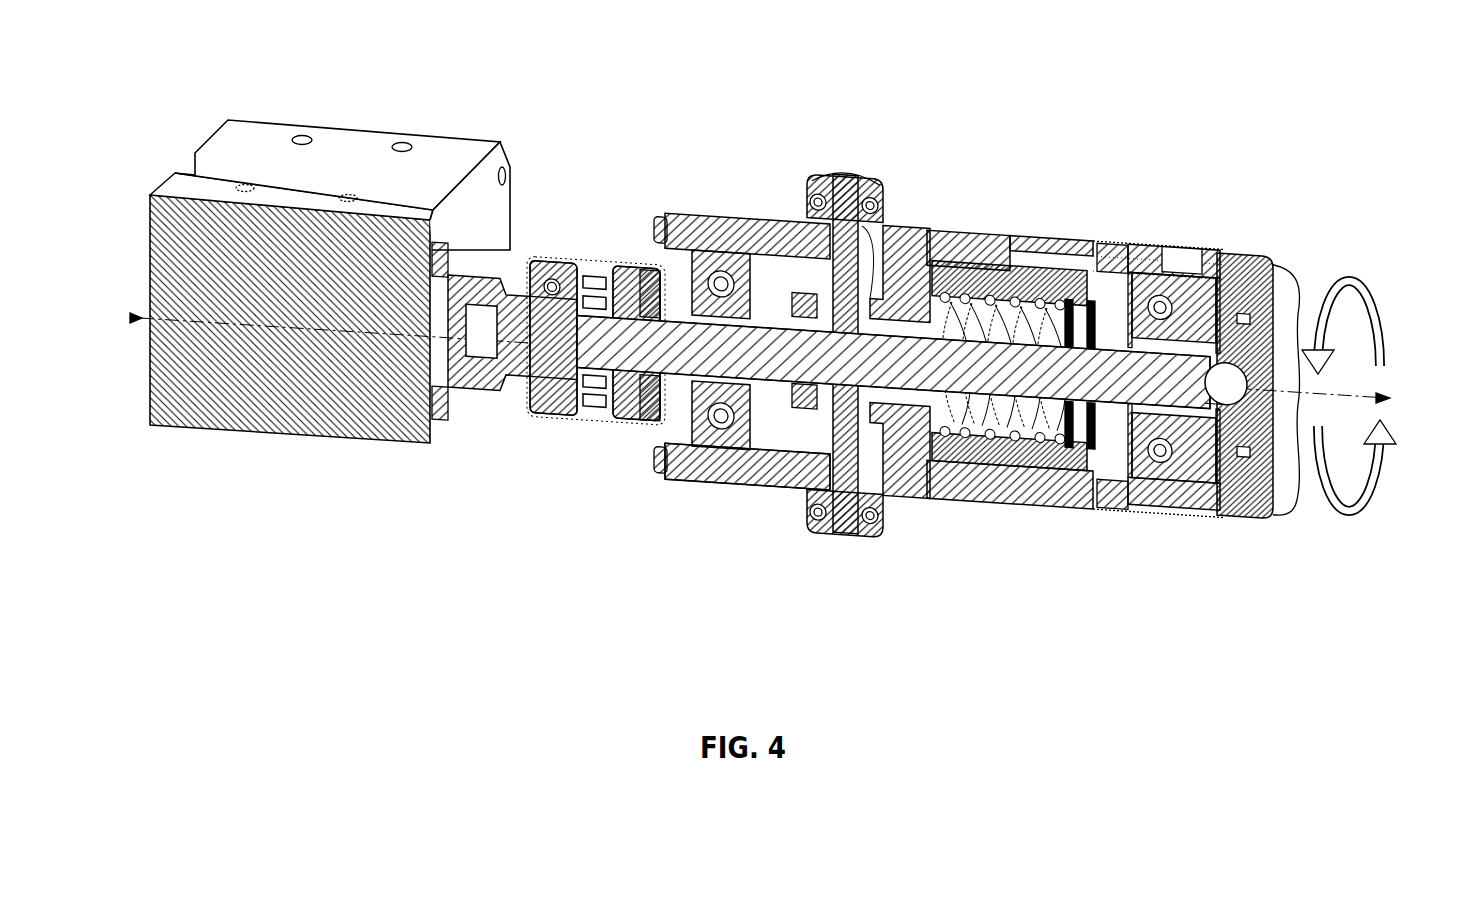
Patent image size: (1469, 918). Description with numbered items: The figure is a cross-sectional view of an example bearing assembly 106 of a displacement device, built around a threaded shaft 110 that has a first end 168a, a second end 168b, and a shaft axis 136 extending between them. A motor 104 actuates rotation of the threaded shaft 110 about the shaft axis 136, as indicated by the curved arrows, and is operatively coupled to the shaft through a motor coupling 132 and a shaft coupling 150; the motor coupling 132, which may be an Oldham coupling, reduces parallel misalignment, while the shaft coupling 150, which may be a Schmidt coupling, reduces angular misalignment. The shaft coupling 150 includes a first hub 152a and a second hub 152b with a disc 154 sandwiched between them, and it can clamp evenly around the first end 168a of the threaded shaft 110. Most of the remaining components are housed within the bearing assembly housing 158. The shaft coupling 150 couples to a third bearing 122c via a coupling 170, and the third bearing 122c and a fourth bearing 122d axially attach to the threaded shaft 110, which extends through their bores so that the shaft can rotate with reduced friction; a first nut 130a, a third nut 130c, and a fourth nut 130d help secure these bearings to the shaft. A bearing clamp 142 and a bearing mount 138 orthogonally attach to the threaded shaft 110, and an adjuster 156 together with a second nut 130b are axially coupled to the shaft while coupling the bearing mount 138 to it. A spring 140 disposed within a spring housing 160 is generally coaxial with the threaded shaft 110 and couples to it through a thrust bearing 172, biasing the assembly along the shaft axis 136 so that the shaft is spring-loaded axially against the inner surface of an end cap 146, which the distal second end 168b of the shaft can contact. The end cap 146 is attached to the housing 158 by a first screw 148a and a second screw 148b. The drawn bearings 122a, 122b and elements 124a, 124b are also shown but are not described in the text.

The motor 104 is at (322, 410).
The bearing assembly 106 is at (306, 68).
The threaded shaft 110 is at (1135, 333).
The bearing housing 122a is at (805, 195).
The bearing housing 122b is at (885, 520).
The third bearing 122c is at (695, 442).
The fourth bearing 122d is at (1130, 505).
The bearing 124a is at (845, 172).
The bearing 124b is at (845, 530).
The first nut 130a is at (752, 435).
The second nut 130b is at (790, 430).
The third nut 130c is at (1118, 440).
The fourth nut 130d is at (1198, 445).
The motor coupling 132 is at (487, 415).
The shaft axis 136 is at (785, 396).
The bearing mount 138 is at (880, 250).
The spring 140 is at (997, 452).
The bearing clamp 142 is at (840, 163).
The end cap 146 is at (1250, 480).
The first screw 148a is at (1273, 300).
The second screw 148b is at (1253, 470).
The shaft coupling 150 is at (596, 318).
The first hub 152a is at (548, 402).
The second hub 152b is at (625, 415).
The disc 154 is at (592, 388).
The adjuster 156 is at (895, 290).
The bearing assembly housing 158 is at (667, 233).
The spring housing 160 is at (970, 262).
The first end 168a is at (614, 183).
The second end 168b is at (1282, 186).
The coupling 170 is at (636, 408).
The thrust bearing 172 is at (1070, 298).